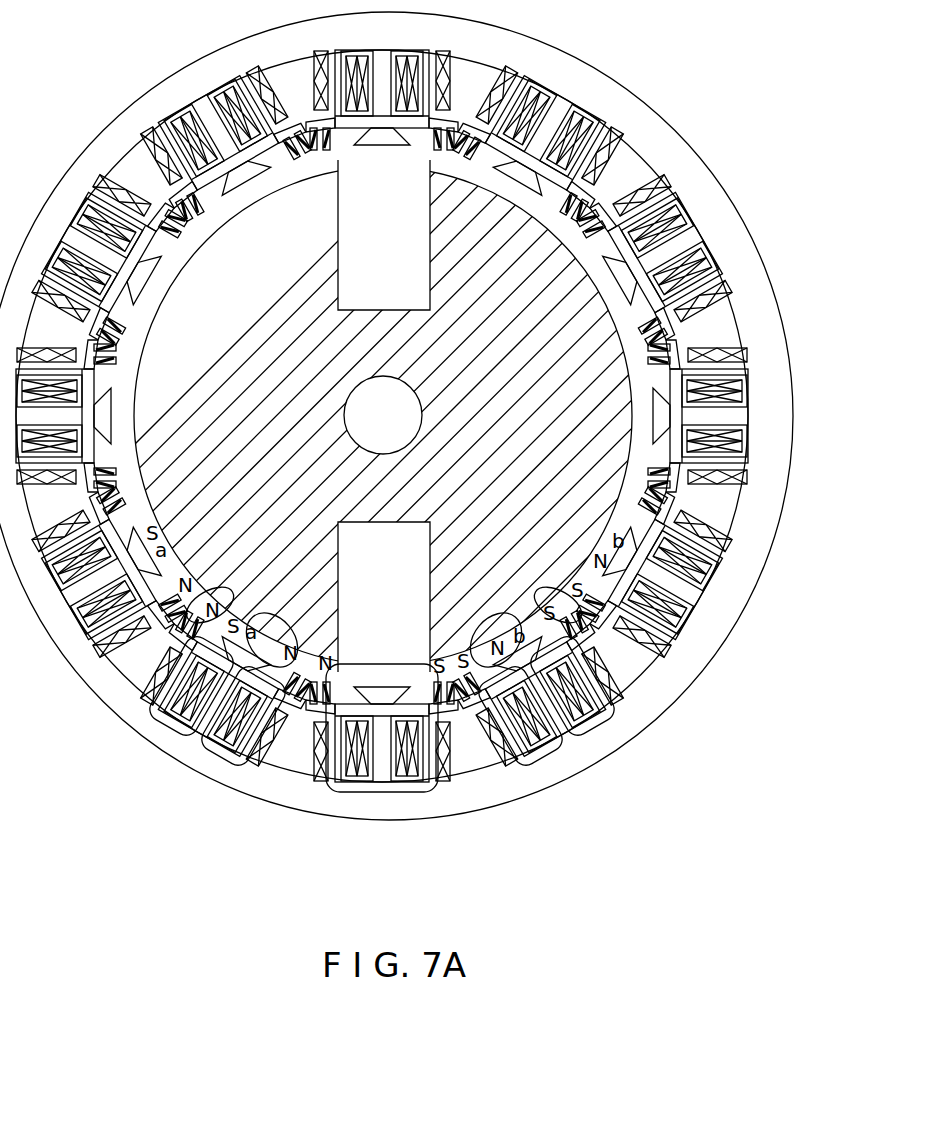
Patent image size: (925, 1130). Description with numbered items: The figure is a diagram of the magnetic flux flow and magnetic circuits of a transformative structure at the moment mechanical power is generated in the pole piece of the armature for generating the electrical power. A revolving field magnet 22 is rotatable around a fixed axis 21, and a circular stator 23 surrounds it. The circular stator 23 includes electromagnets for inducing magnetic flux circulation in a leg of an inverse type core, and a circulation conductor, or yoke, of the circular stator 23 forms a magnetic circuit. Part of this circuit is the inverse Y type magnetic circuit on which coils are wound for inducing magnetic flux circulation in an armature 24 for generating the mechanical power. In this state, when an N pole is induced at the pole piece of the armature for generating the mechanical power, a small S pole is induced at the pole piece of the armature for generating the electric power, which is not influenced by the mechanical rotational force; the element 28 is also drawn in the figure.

The fixed axis 21 is at (384, 376).
The revolving field magnet 22 is at (567, 290).
The circular stator 23 is at (700, 150).
The armature for generating the mechanical power 24 is at (673, 343).
The coil 28 is at (748, 378).